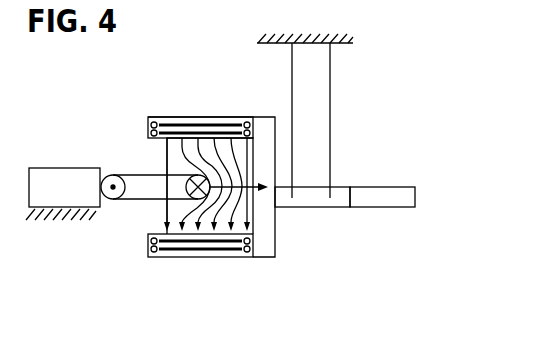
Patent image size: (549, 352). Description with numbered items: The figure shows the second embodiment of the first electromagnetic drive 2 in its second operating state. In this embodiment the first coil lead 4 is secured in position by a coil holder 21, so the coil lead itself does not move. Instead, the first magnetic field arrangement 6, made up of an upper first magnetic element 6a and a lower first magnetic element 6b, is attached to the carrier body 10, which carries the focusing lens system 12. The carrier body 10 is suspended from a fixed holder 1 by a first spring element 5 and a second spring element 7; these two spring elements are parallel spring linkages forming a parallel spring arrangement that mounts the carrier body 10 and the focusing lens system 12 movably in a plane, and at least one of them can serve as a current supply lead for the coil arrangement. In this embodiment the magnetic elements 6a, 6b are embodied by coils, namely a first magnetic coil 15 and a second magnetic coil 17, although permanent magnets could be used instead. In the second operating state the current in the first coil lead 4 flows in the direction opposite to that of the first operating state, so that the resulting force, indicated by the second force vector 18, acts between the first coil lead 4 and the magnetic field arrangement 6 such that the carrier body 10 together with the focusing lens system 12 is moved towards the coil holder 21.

The holder 1 is at (340, 45).
The first electromagnetic drive 2 is at (213, 194).
The first coil lead 4 is at (138, 200).
The first spring element 5 is at (292, 58).
The first magnetic field arrangement 6 is at (237, 203).
The upper first magnetic element 6a is at (200, 107).
The lower first magnetic element 6b is at (199, 274).
The second spring element 7 is at (330, 108).
The carrier body 10 is at (332, 208).
The focusing lens system 12 is at (385, 208).
The first magnetic coil 15 is at (190, 118).
The second magnetic coil 17 is at (183, 250).
The second force vector 18 is at (276, 210).
The coil holder 21 is at (60, 167).